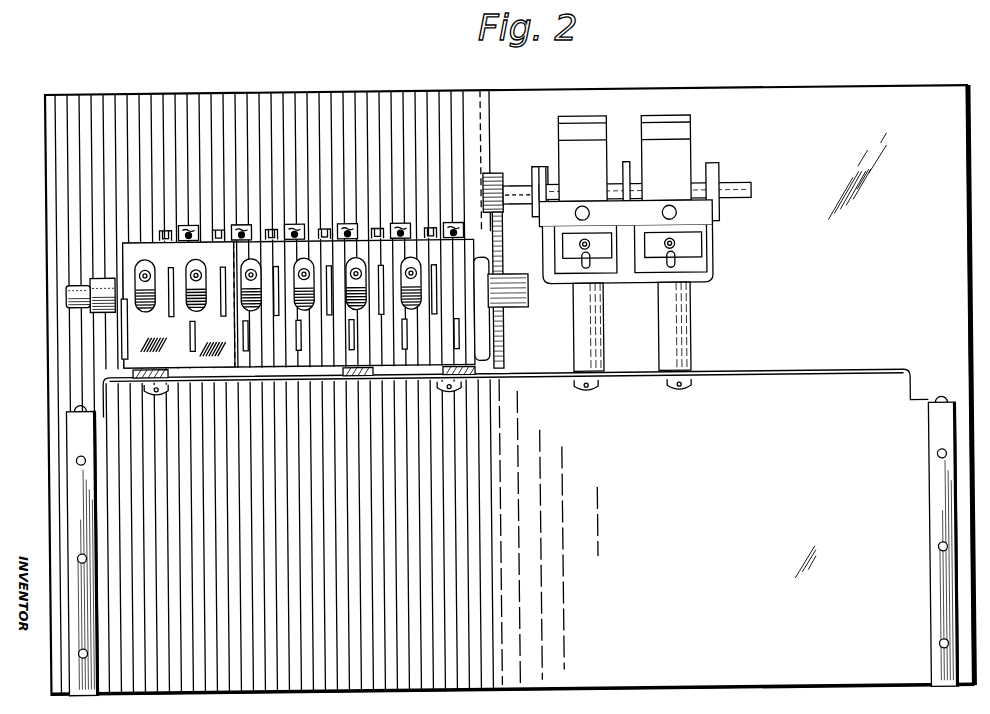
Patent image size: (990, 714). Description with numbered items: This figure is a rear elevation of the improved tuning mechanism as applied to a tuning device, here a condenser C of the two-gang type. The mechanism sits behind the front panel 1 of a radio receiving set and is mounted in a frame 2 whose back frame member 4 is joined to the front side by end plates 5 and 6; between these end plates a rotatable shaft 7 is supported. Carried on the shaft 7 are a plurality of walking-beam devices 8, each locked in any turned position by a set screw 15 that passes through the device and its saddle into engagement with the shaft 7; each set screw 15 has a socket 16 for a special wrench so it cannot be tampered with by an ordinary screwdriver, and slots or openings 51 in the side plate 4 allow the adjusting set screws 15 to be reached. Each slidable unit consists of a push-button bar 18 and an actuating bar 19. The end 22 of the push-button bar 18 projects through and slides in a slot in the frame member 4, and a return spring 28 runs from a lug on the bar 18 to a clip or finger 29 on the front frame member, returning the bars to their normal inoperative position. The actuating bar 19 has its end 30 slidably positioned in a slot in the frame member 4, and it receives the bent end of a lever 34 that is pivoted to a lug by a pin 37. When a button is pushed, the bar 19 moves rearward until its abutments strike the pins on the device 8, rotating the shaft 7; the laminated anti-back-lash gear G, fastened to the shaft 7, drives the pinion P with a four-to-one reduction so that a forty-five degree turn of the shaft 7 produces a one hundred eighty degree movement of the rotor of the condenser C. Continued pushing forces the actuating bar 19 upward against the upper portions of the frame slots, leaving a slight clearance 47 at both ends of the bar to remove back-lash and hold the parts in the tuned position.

The front panel 1 is at (783, 102).
The frame 2 is at (108, 331).
The back frame member 4 is at (112, 366).
The end plate 5 is at (114, 340).
The end plate 6 is at (472, 345).
The rotatable shaft 7 is at (66, 304).
The device 8 is at (146, 292).
The set screw 15 is at (135, 278).
The socket 16 is at (130, 275).
The push-button bar 18 is at (238, 325).
The actuating bar 19 is at (219, 290).
The end of push-button bar 22 is at (165, 382).
The spring 28 is at (185, 238).
The clip 29 is at (217, 232).
The end of actuating bar 30 is at (187, 319).
The lever 34 is at (156, 236).
The pin 37 is at (145, 247).
The clearance 47 is at (190, 340).
The slots 51 is at (140, 265).
The pinion P is at (497, 180).
The laminated gear G is at (502, 282).
The condenser C is at (652, 150).